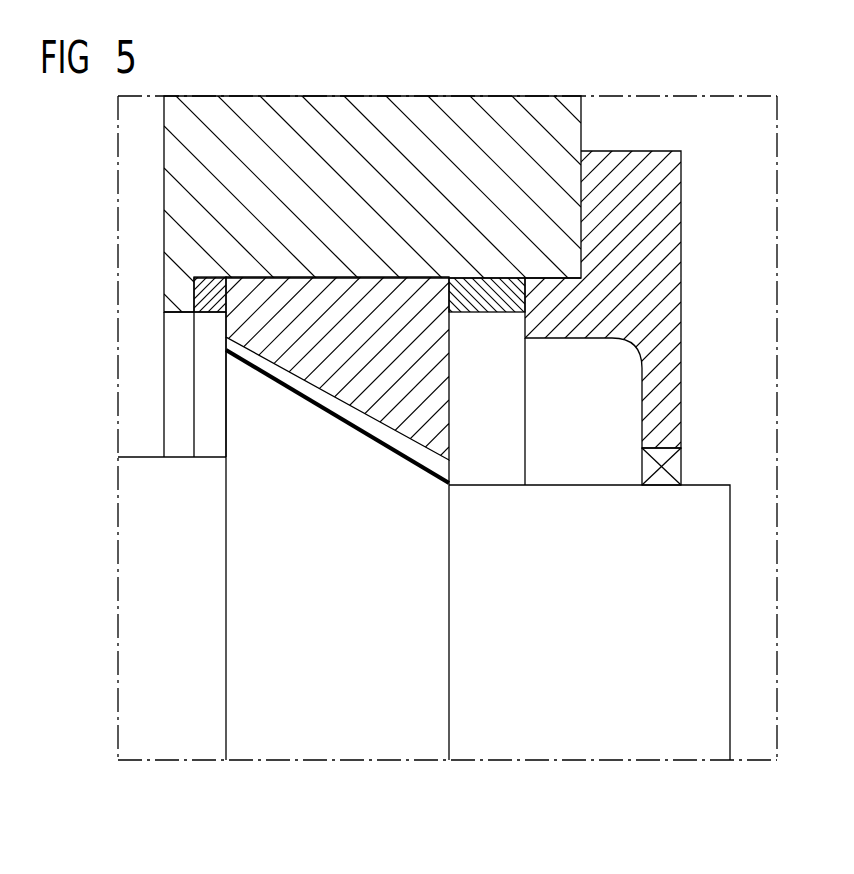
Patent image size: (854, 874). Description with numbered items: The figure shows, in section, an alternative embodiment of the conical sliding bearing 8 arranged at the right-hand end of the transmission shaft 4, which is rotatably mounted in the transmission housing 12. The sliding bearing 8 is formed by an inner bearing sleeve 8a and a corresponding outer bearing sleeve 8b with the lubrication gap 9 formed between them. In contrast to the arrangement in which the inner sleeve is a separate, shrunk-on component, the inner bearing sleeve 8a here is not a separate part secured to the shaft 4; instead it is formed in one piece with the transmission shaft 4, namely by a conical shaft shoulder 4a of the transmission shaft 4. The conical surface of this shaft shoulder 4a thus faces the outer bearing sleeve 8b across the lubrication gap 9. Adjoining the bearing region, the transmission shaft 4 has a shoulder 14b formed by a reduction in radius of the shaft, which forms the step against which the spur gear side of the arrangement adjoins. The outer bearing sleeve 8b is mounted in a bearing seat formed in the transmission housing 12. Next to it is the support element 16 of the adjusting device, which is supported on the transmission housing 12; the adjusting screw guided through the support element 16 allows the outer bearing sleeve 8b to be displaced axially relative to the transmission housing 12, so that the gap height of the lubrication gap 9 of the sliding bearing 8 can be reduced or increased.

The transmission shaft 4 is at (710, 643).
The conical shaft shoulder 4a is at (256, 432).
The sliding bearing 8 is at (334, 268).
The inner bearing sleeve 8a is at (337, 458).
The outer bearing sleeve 8b is at (262, 310).
The lubrication gap 9 is at (237, 349).
The transmission housing 12 is at (562, 120).
The shoulder 14b is at (220, 464).
The support element 16 is at (676, 193).